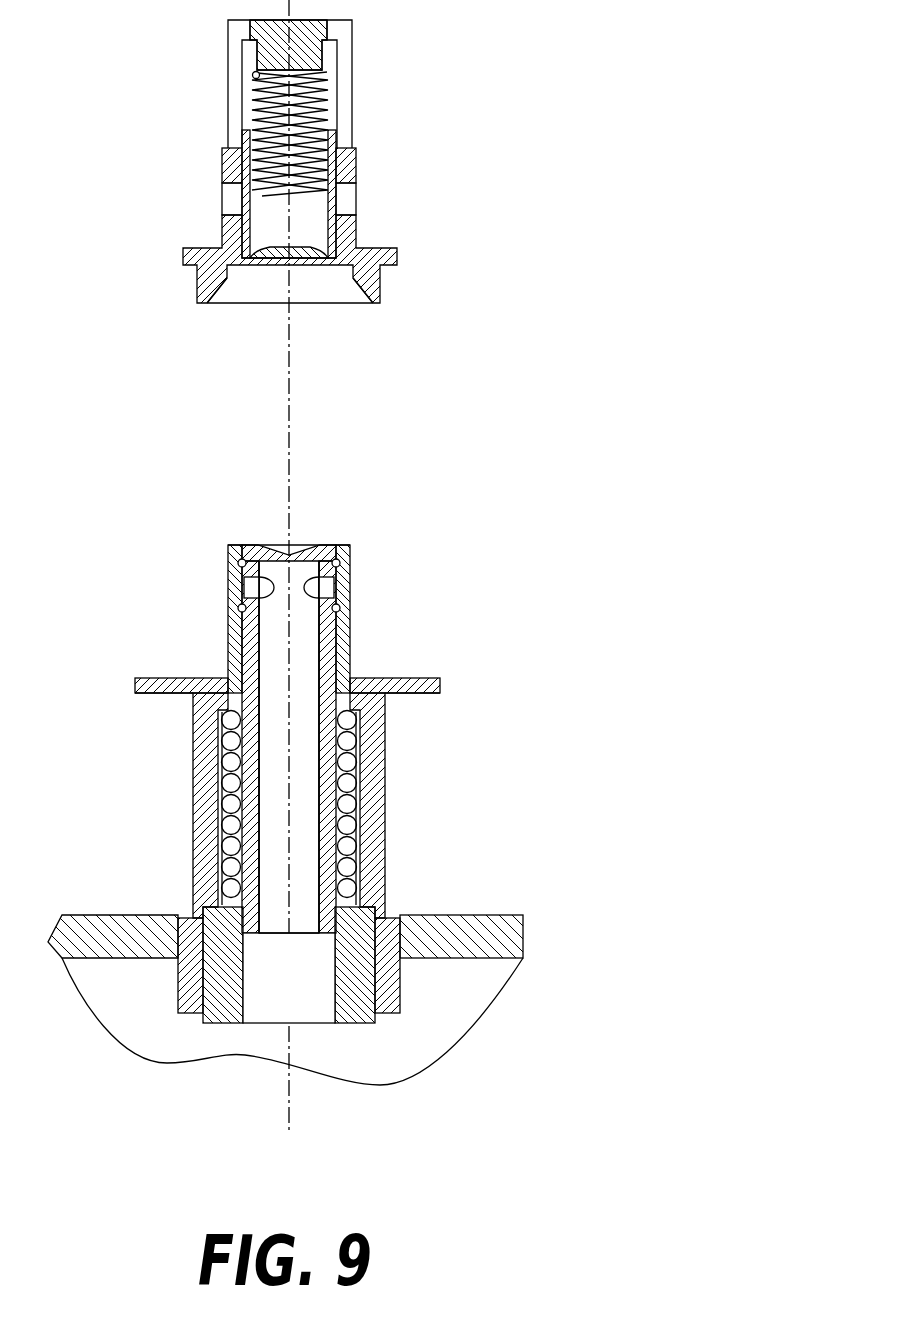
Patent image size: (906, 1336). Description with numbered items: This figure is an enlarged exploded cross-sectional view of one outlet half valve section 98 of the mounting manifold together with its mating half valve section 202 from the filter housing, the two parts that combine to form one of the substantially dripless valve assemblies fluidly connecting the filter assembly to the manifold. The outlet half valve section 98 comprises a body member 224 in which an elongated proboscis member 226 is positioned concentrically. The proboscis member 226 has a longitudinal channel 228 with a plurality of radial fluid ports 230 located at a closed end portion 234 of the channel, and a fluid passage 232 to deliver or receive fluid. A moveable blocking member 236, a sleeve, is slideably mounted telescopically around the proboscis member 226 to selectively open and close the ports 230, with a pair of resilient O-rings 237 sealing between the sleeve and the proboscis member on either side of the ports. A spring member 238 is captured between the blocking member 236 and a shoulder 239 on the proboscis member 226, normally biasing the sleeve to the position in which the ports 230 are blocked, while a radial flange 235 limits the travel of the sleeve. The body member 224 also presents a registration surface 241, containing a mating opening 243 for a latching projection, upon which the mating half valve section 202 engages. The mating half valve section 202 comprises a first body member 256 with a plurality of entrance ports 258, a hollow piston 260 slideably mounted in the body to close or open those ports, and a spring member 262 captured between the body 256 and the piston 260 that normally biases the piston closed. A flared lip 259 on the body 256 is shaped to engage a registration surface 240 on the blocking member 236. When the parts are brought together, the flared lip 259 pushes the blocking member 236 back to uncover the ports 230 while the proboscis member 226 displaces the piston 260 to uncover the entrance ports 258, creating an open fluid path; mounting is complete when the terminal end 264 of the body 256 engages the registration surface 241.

The mating half valve section 202 is at (378, 120).
The spring member 262 is at (327, 80).
The hollow piston 260 is at (243, 137).
The entrance ports 258 is at (233, 197).
The first body member 256 is at (357, 232).
The terminal end 264 is at (207, 303).
The flared lip 259 is at (343, 303).
The outlet half valve section 98 is at (517, 778).
The moveable blocking member 236 is at (351, 650).
The closed end portion 234 is at (292, 548).
The registration surface 240 is at (347, 546).
The radial flange 235 is at (340, 706).
The proboscis member 226 is at (340, 672).
The radial fluid ports 230 is at (323, 586).
The resilient O-rings 237 is at (241, 609).
The registration surface 241 is at (160, 677).
The mating opening 243 is at (148, 693).
The body member 224 is at (386, 788).
The spring member 238 is at (360, 833).
The shoulder 239 is at (380, 893).
The fluid passage 232 is at (317, 1007).
The longitudinal channel 228 is at (278, 847).